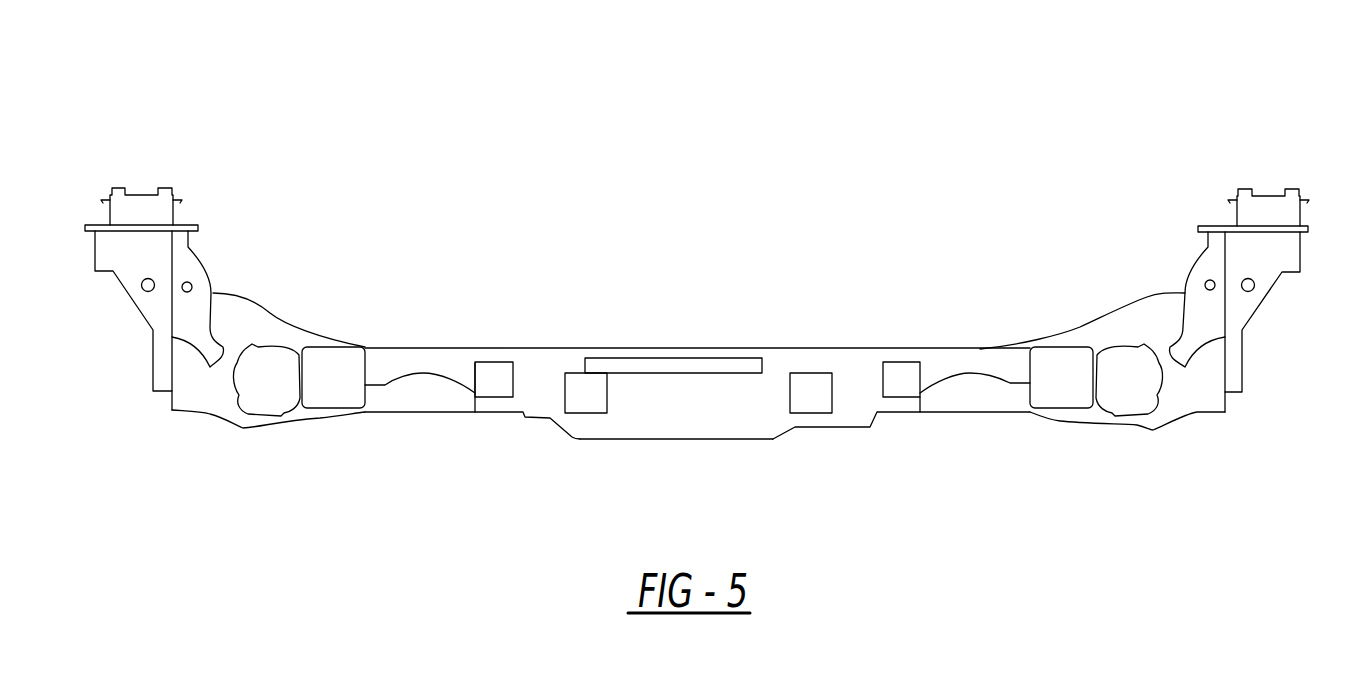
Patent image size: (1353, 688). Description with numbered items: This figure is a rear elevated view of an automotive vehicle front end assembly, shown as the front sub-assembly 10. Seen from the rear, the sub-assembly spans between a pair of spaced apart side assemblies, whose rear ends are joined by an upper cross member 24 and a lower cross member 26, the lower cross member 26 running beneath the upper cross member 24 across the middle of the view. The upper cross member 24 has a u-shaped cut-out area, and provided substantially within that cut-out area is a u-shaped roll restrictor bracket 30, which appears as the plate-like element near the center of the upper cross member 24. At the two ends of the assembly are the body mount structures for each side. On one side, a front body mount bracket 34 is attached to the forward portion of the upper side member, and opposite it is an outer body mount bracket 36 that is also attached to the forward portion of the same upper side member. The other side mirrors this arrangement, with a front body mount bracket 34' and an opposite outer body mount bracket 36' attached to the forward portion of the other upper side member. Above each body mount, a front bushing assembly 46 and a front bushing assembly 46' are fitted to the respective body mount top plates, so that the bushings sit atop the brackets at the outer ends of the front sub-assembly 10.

The front sub-assembly 10 is at (998, 188).
The upper cross member 24 is at (545, 363).
The lower cross member 26 is at (762, 432).
The u-shaped roll restrictor bracket 30 is at (705, 367).
The front body mount bracket 34 is at (214, 272).
The outer body mount bracket 36 is at (136, 317).
The front bushing assembly 46 is at (141, 168).
The front body mount bracket 34' is at (1189, 271).
The outer body mount bracket 36' is at (1270, 319).
The front bushing assembly 46' is at (1268, 169).